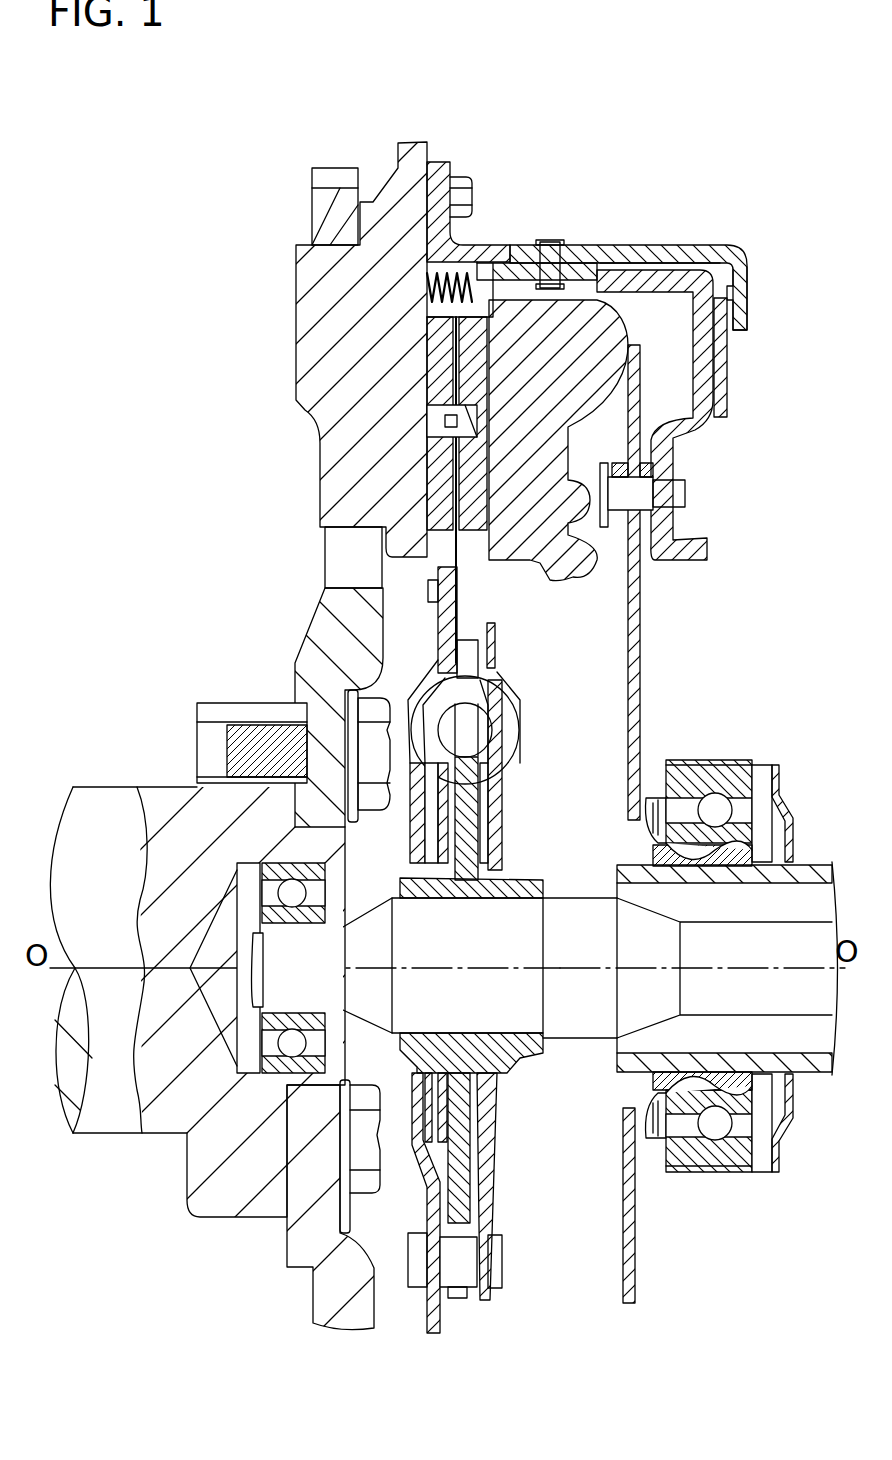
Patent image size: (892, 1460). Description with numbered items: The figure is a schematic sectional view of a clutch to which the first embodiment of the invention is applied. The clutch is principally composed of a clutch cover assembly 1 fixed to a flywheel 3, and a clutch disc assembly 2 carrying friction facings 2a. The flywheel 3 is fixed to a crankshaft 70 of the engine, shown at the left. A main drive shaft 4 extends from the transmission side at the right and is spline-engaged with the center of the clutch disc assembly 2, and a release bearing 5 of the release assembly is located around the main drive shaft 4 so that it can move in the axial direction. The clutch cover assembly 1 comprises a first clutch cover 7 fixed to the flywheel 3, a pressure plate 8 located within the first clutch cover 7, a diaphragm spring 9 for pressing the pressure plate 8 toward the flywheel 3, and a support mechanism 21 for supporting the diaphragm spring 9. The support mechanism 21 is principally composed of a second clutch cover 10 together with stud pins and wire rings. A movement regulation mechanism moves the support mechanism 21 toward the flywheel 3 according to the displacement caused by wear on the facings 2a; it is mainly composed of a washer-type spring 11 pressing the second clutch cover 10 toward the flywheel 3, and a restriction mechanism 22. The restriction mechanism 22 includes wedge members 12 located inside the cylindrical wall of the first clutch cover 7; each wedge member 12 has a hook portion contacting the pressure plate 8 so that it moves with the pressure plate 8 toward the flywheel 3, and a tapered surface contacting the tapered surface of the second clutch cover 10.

The clutch cover assembly 1 is at (752, 266).
The clutch disc assembly 2 is at (405, 625).
The facings 2a is at (470, 532).
The flywheel 3 is at (335, 372).
The main drive shaft 4 is at (568, 1020).
The release bearing 5 is at (740, 756).
The first clutch cover 7 is at (596, 245).
The pressure plate 8 is at (555, 560).
The diaphragm spring 9 is at (642, 673).
The second clutch cover 10 is at (688, 440).
The washer-type spring 11 is at (720, 360).
The wedge member 12 is at (510, 258).
The support mechanism 21 is at (700, 503).
The restriction mechanism 22 is at (618, 216).
The crankshaft 70 is at (165, 823).